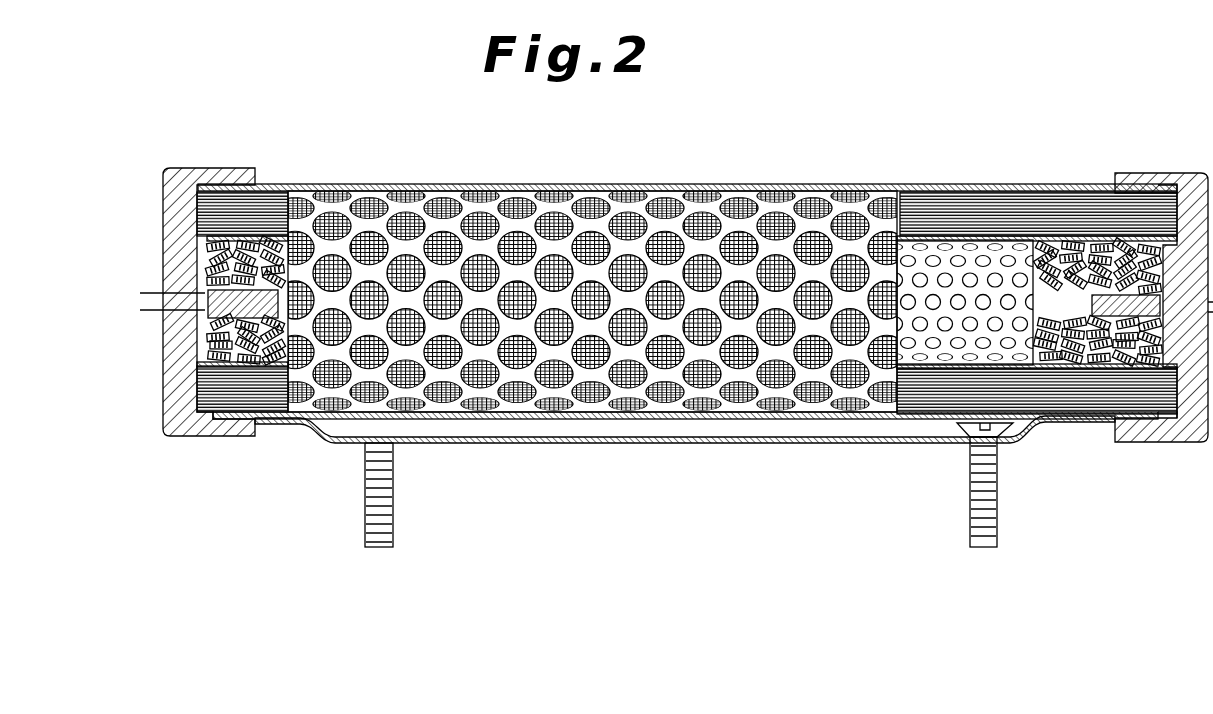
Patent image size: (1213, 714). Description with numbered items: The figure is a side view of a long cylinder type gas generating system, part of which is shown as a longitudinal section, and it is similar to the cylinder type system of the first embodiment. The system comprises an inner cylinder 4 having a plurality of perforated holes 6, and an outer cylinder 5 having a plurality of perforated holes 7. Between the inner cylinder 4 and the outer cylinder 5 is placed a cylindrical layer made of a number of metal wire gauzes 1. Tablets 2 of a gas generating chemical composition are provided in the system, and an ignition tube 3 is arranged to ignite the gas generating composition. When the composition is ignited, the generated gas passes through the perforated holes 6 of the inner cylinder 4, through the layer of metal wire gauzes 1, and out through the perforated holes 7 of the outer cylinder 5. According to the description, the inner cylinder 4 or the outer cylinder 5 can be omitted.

The metal wire gauzes 1 is at (264, 208).
The tablets of gas generating chemical composition 2 is at (1107, 366).
The ignition tube 3 is at (1113, 258).
The inner cylinder 4 is at (1037, 247).
The outer cylinder 5 is at (920, 187).
The perforated holes 6 is at (1080, 237).
The perforated holes 7 is at (813, 243).